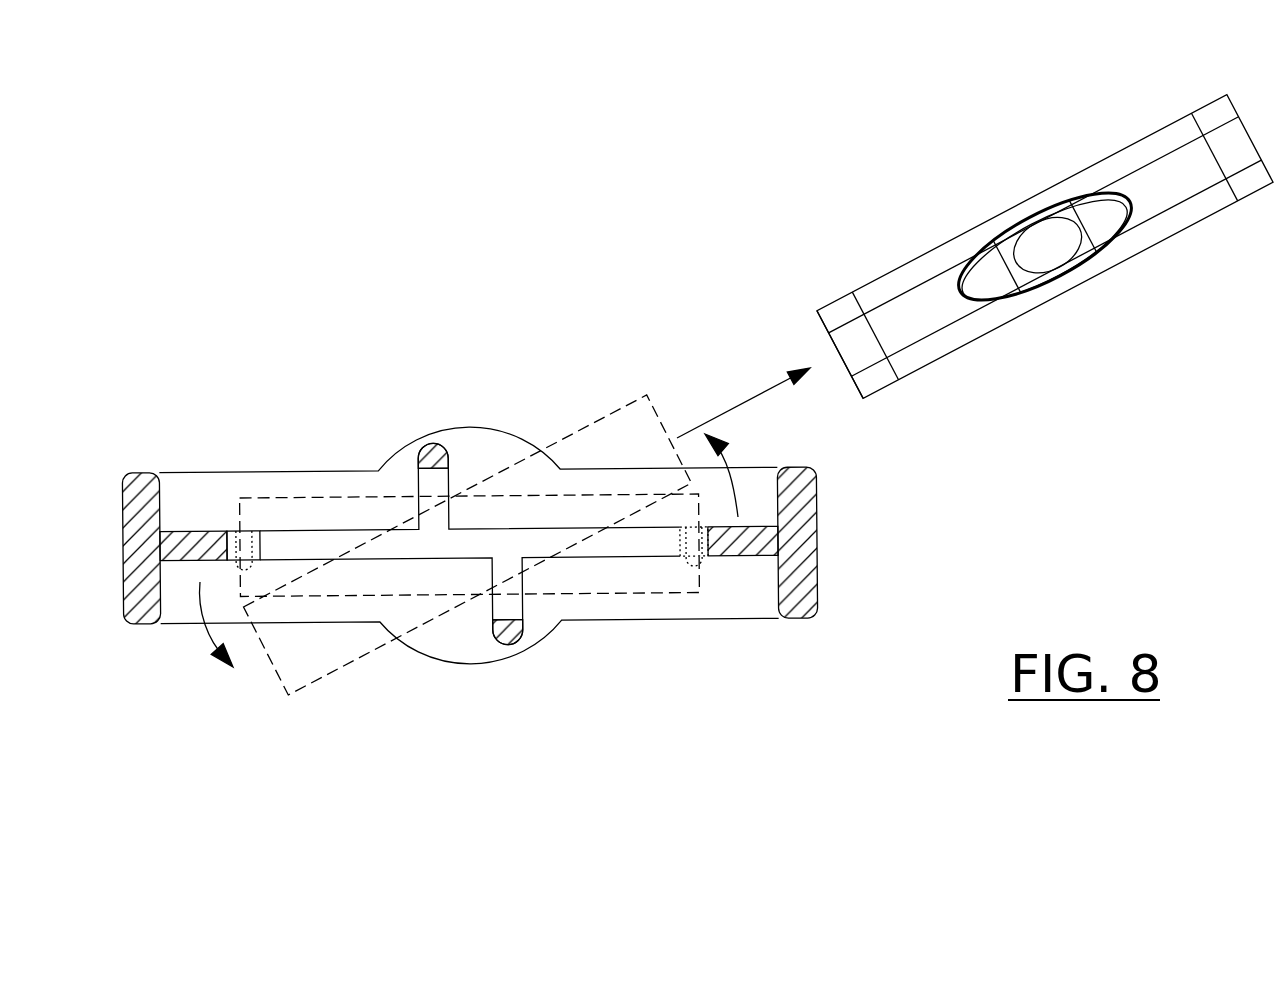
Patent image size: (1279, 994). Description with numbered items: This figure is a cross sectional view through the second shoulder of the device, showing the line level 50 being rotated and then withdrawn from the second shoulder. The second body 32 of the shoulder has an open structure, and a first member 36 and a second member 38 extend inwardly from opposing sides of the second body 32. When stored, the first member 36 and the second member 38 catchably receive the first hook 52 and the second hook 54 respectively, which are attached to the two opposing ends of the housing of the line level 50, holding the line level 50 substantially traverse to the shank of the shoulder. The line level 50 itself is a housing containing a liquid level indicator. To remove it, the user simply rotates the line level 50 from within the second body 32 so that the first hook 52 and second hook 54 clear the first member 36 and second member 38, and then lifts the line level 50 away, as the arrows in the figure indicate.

The second body 32 is at (133, 578).
The first member 36 is at (692, 540).
The second member 38 is at (250, 548).
The line level 50 is at (1030, 287).
The first hook 52 is at (1237, 151).
The second hook 54 is at (853, 343).